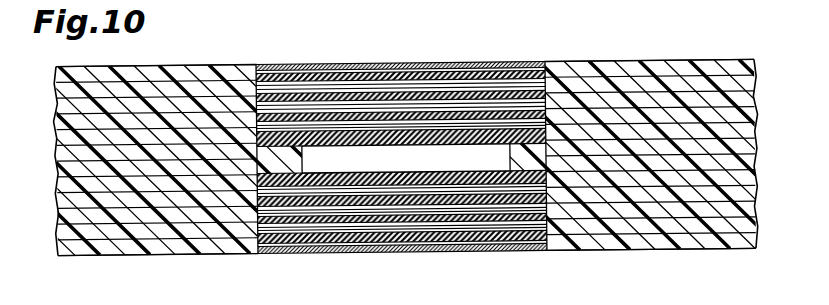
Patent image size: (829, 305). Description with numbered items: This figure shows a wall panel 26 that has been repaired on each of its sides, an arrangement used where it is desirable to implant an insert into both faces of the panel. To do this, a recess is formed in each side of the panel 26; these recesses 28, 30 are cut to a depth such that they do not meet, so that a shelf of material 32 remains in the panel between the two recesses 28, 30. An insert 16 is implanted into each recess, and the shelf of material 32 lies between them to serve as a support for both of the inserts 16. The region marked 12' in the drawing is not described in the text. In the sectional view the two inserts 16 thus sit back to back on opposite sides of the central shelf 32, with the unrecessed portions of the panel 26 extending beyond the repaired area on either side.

The cavity / pocket 12' is at (406, 92).
The insert 16 is at (355, 104).
The panel 26 is at (185, 237).
The recess 28 is at (530, 95).
The recess 30 is at (547, 210).
The shelf of material 32 is at (530, 160).